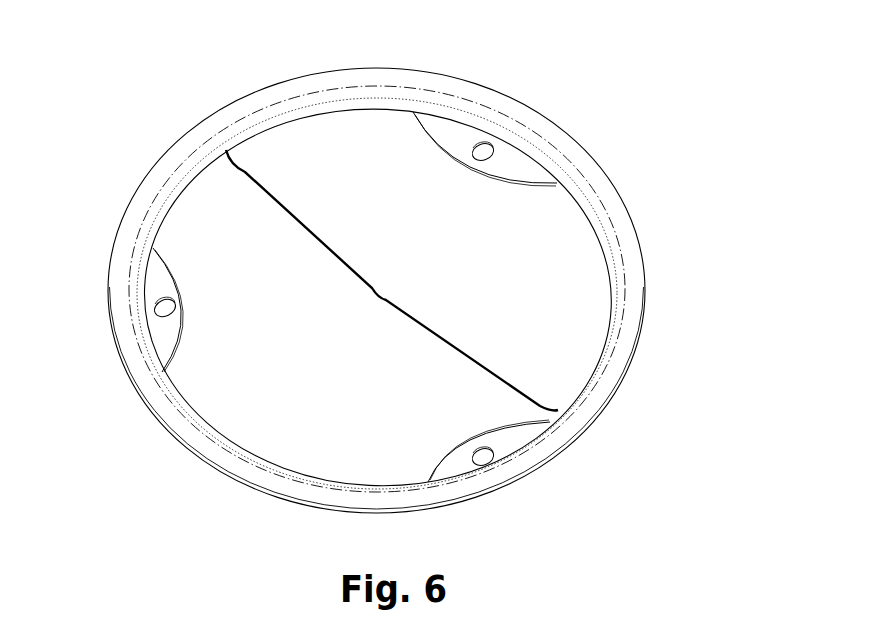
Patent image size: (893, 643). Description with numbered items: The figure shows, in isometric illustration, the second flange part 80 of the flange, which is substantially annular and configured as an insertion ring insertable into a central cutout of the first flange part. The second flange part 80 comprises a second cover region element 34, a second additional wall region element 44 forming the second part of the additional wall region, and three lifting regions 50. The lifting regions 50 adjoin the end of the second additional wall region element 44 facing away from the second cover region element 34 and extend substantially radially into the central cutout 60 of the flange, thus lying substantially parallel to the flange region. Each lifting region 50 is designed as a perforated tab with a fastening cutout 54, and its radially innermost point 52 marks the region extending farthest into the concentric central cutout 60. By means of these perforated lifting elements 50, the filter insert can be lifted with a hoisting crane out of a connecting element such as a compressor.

The second flange part 80 is at (131, 115).
The second cover region element 34 is at (636, 238).
The second additional wall region element 44 is at (243, 128).
The lifting region 50 is at (445, 133).
The radially innermost point of the lifting regions 52 is at (468, 164).
The fastening cutout 54 is at (482, 146).
The central cutout 60 is at (392, 280).